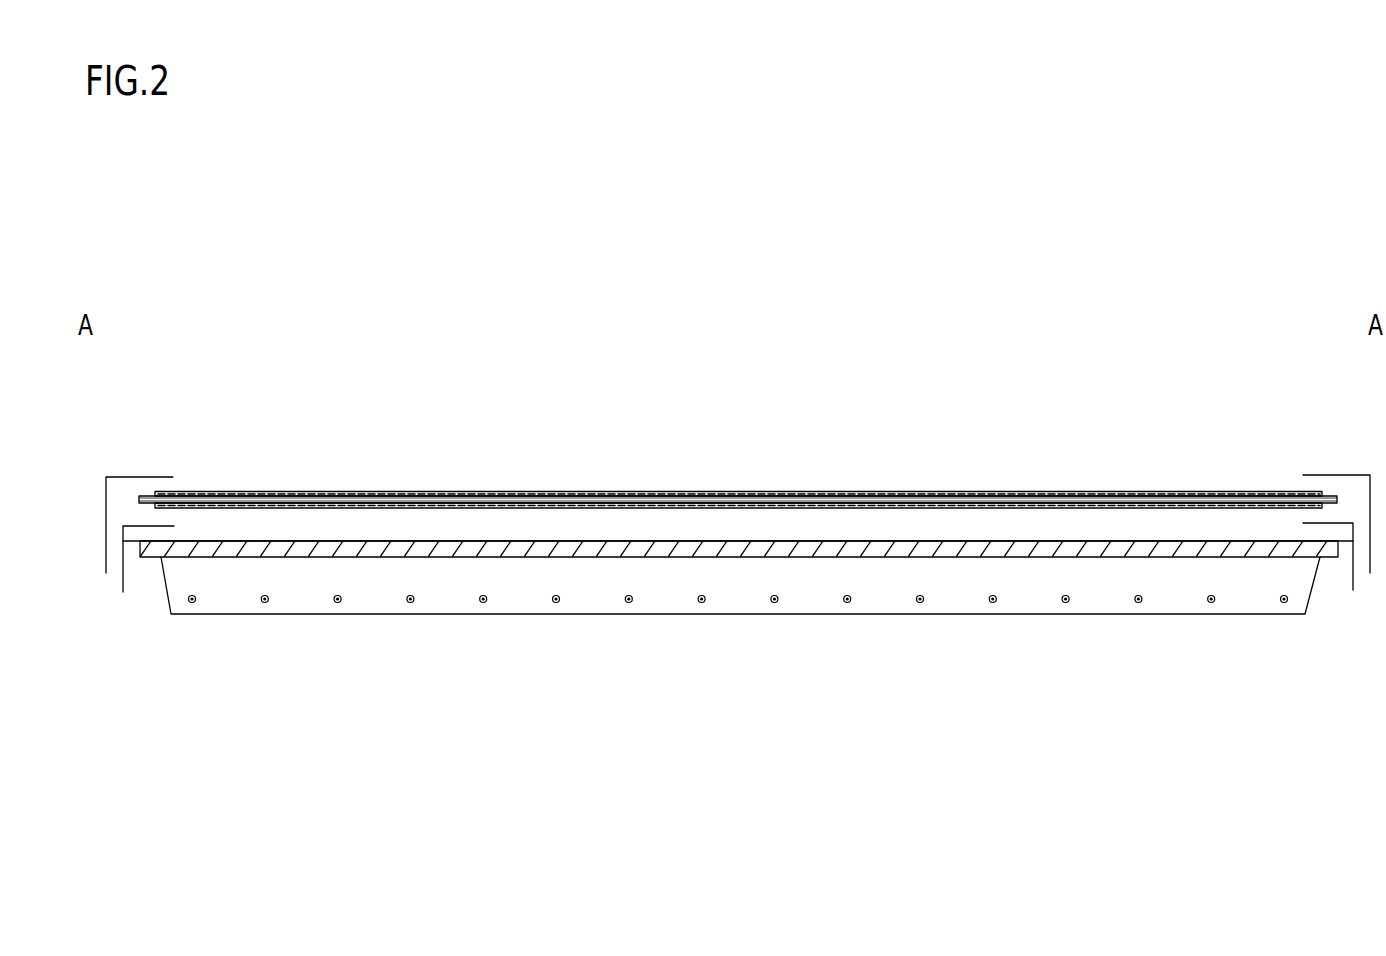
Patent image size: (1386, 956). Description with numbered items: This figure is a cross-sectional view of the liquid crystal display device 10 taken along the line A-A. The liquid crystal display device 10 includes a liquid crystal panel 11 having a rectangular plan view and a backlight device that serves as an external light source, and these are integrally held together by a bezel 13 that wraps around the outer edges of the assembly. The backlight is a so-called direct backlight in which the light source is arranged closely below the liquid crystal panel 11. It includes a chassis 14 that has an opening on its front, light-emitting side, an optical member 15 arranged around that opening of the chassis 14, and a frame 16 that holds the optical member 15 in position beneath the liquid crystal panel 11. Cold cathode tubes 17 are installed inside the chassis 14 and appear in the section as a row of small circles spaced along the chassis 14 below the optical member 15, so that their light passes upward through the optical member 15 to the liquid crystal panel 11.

The liquid crystal display device 10 is at (499, 431).
The liquid crystal panel 11 is at (378, 492).
The bezel 13 is at (145, 475).
The chassis 14 is at (170, 598).
The optical member 15 is at (692, 545).
The frame 16 is at (133, 520).
The cold cathode tubes 17 is at (337, 595).